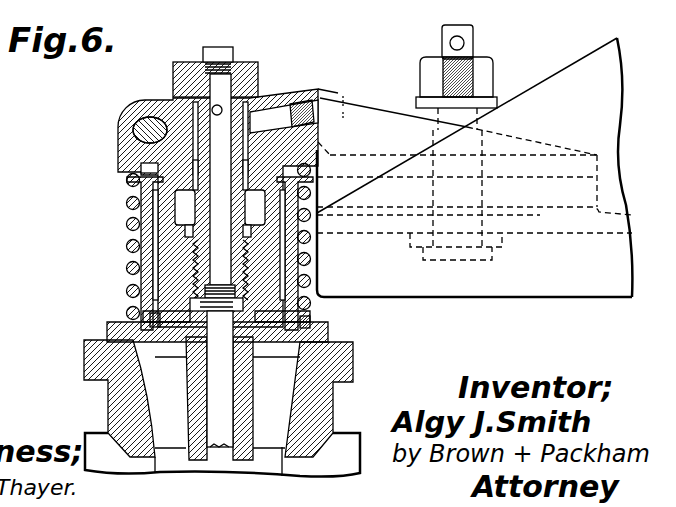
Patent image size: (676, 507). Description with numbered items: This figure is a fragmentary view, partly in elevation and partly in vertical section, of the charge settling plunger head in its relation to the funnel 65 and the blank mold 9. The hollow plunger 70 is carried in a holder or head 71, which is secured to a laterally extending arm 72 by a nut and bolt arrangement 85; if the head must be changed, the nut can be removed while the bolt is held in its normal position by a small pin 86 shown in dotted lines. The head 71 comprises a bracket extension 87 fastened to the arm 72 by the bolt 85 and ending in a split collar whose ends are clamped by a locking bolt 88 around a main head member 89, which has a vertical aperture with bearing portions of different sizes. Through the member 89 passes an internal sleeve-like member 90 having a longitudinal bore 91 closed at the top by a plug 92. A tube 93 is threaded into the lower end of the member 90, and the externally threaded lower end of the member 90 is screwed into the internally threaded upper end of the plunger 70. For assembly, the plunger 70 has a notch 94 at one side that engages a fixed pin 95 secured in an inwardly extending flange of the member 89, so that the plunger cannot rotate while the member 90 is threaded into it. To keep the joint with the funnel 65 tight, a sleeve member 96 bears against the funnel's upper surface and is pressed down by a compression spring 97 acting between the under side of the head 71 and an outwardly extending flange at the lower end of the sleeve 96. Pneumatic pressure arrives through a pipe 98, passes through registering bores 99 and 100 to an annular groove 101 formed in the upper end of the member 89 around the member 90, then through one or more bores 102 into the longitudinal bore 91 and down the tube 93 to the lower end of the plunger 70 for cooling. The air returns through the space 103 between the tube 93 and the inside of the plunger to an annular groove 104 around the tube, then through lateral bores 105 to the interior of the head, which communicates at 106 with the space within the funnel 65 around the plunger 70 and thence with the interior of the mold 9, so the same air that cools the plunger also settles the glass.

The mold 9 is at (342, 443).
The funnel 65 is at (320, 397).
The plunger 70 is at (246, 368).
The holder 71 is at (140, 107).
The laterally extending arm 72 is at (574, 78).
The nut and bolt arrangement 85 is at (483, 73).
The pin 86 is at (462, 190).
The bracket extension 87 is at (365, 112).
The locking bolt 88 is at (143, 133).
The main head member 89 is at (171, 107).
The internal sleeve-like member 90 is at (253, 77).
The longitudinal bore 91 is at (193, 207).
The plug 92 is at (233, 49).
The tube 93 is at (218, 390).
The notch 94 is at (187, 252).
The fixed pin 95 is at (180, 238).
The sleeve member 96 is at (147, 283).
The compression spring 97 is at (125, 183).
The pipe 98 is at (333, 93).
The bore 99 is at (270, 110).
The bore 100 is at (253, 103).
The annular groove 101 is at (192, 113).
The bore 102 is at (216, 105).
The space 103 is at (208, 418).
The annular groove 104 is at (283, 308).
The lateral bore 105 is at (200, 305).
The communication 106 is at (290, 333).